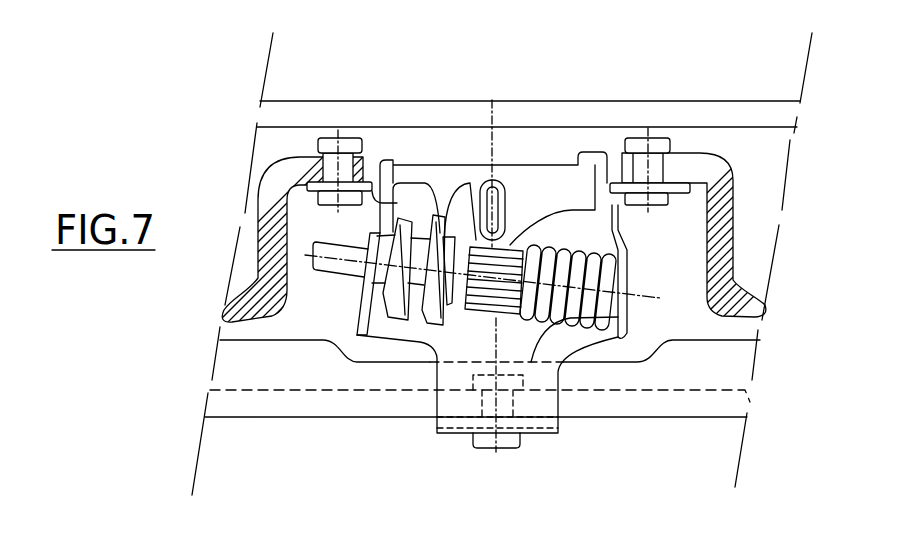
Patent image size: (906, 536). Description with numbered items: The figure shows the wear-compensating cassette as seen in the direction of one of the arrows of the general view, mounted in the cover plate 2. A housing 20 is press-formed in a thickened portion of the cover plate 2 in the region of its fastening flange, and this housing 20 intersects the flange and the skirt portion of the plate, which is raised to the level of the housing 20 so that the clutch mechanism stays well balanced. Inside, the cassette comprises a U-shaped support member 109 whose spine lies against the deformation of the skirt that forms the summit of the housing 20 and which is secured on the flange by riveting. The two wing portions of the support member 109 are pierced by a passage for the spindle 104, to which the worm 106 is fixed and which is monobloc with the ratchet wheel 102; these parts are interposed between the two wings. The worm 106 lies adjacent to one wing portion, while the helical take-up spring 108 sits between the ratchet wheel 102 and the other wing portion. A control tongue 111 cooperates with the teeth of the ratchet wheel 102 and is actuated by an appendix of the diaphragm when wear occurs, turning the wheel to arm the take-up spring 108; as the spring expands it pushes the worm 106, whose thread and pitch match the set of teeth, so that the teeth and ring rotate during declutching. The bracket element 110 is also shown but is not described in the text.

The cover plate 2 is at (619, 423).
The housing 20 is at (698, 230).
The ratchet wheel 102 is at (511, 246).
The spindle 104 is at (337, 272).
The worm 106 is at (433, 193).
The take-up spring 108 is at (531, 362).
The support member 109 is at (432, 330).
The support bracket 110 is at (565, 150).
The control tongue 111 is at (478, 180).